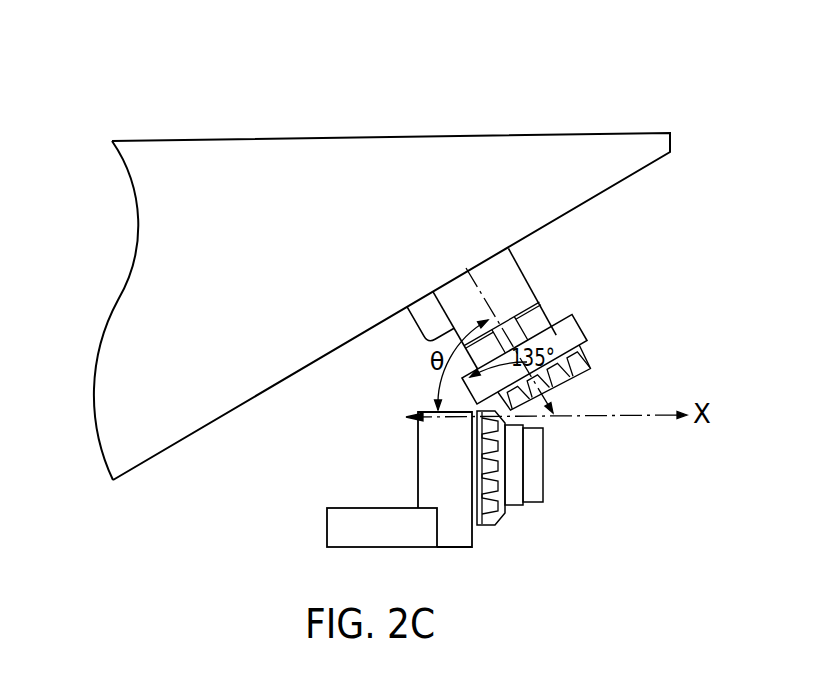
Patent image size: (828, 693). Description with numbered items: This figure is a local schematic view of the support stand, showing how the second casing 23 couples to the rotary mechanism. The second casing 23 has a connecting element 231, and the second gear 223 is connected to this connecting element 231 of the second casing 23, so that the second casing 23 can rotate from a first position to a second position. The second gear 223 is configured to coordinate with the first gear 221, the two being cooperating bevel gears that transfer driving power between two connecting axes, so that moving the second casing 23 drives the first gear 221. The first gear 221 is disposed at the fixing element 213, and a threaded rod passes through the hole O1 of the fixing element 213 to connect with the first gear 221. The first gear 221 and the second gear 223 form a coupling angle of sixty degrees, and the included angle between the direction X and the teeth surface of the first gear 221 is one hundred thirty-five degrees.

The second casing 23 is at (434, 156).
The connecting element 231 is at (523, 294).
The second gear 223 is at (570, 338).
The first gear 221 is at (517, 502).
The fixing element 213 is at (348, 528).
The hole O1 is at (406, 468).